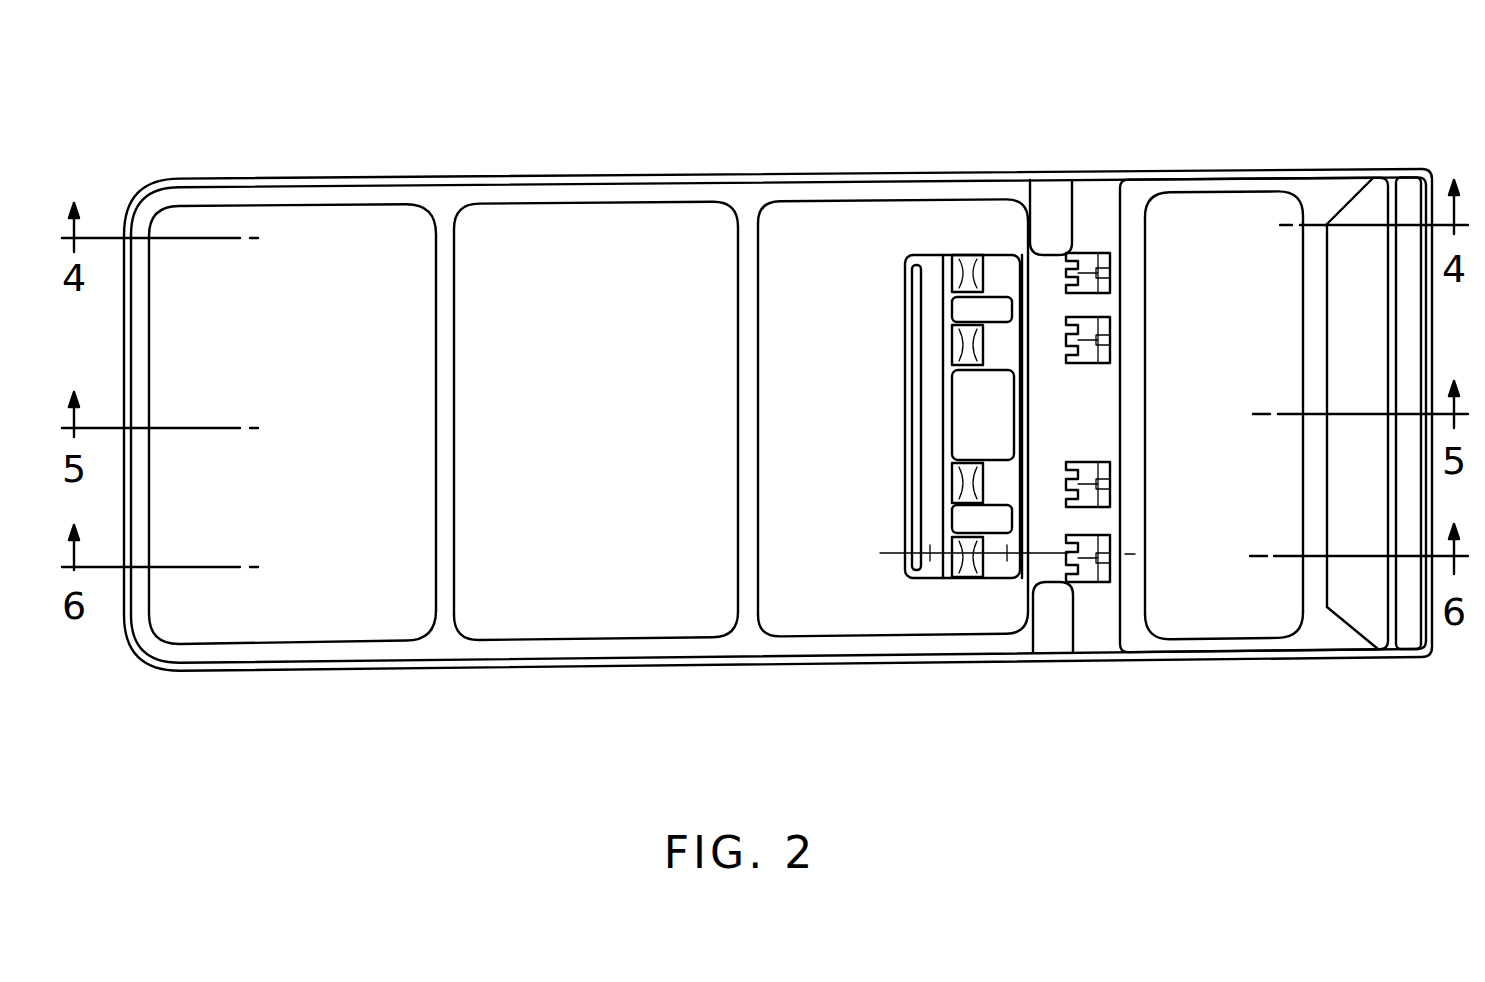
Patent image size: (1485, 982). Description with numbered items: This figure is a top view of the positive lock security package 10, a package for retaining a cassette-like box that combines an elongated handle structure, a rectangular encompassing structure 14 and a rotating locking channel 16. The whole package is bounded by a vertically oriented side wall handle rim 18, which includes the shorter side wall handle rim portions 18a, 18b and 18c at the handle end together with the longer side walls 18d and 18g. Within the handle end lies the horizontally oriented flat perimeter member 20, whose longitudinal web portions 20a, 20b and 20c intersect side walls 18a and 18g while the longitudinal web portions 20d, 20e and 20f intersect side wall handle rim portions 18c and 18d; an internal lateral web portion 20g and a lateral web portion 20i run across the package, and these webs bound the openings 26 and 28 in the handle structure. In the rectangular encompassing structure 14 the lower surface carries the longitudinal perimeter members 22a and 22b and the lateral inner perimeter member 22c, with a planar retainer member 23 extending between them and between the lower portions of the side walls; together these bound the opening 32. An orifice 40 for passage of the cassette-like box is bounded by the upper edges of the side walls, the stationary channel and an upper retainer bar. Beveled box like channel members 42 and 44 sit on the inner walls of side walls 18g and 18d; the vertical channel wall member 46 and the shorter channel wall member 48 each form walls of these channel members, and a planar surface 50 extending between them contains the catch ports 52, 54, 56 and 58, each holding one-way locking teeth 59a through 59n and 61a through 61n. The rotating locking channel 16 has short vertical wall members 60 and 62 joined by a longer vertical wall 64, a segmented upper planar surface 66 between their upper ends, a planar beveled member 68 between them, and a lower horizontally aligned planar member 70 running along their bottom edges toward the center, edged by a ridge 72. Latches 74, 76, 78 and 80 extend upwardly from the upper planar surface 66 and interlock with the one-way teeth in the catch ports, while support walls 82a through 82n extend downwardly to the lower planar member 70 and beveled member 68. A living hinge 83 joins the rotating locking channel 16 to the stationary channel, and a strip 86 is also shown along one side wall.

The positive lock security package 10 is at (691, 146).
The rectangular encompassing structure 14 is at (1200, 660).
The rotating locking channel 16 is at (934, 253).
The side wall handle rim 18 is at (124, 347).
The side wall handle rim portion 18a is at (368, 178).
The side wall handle rim portion 18b is at (128, 311).
The side wall handle rim portion 18c is at (375, 672).
The side wall 18d is at (1296, 659).
The side wall 18g is at (1330, 169).
The horizontally oriented flat perimeter member 20 is at (149, 378).
The longitudinal web portion 20a is at (317, 206).
The longitudinal web portion 20b is at (600, 202).
The longitudinal web portion 20c is at (818, 202).
The longitudinal web portion 20d is at (290, 645).
The longitudinal web portion 20e is at (583, 638).
The longitudinal web portion 20f is at (858, 633).
The internal lateral web portion 20g is at (149, 490).
The lateral web portion 20i is at (745, 343).
The longitudinal perimeter member 22a is at (1267, 182).
The longitudinal perimeter member 22b is at (1254, 640).
The lateral inner perimeter member 22c is at (1138, 393).
The planar retainer member 23 is at (1315, 440).
The opening 26 is at (350, 394).
The opening 28 is at (603, 402).
The opening 32 is at (1265, 359).
The orifice 40 is at (1197, 241).
The beveled box like channel member 42 is at (1097, 190).
The beveled box like channel member 44 is at (1105, 632).
The vertical channel wall member 46 is at (1112, 278).
The channel wall member 48 is at (1020, 252).
The planar surface 50 is at (1100, 413).
The catch port 52 is at (1112, 538).
The catch port 54 is at (1112, 484).
The catch port 56 is at (1112, 342).
The catch port 58 is at (1112, 270).
The one-way locking tooth 59a is at (1112, 566).
The one-way locking tooth 59n is at (1112, 264).
The short vertical wall member 60 is at (976, 268).
The one-way locking tooth 61a is at (1062, 585).
The one-way locking tooth 61n is at (1062, 256).
The short vertical wall member 62 is at (1010, 580).
The long vertical wall 64 is at (943, 360).
The segmented upper planar surface 66 is at (1002, 265).
The planar beveled member 68 is at (972, 421).
The lower horizontally aligned planar member 70 is at (912, 275).
The ridge 72 is at (918, 547).
The latch 74 is at (968, 578).
The latch 76 is at (965, 480).
The latch 78 is at (960, 340).
The latch 80 is at (963, 258).
The support wall 82a is at (962, 522).
The support wall 82n is at (960, 305).
The living hinge 83 is at (1027, 392).
The strip 86 is at (1410, 354).